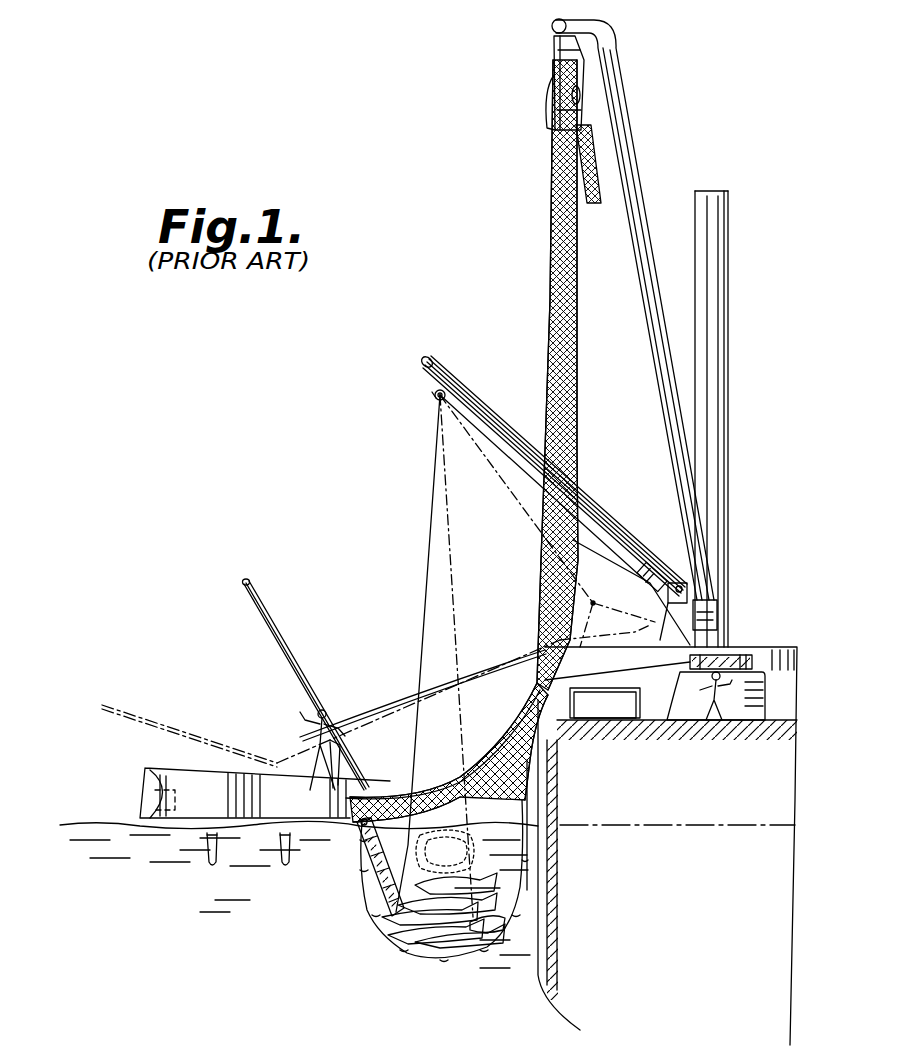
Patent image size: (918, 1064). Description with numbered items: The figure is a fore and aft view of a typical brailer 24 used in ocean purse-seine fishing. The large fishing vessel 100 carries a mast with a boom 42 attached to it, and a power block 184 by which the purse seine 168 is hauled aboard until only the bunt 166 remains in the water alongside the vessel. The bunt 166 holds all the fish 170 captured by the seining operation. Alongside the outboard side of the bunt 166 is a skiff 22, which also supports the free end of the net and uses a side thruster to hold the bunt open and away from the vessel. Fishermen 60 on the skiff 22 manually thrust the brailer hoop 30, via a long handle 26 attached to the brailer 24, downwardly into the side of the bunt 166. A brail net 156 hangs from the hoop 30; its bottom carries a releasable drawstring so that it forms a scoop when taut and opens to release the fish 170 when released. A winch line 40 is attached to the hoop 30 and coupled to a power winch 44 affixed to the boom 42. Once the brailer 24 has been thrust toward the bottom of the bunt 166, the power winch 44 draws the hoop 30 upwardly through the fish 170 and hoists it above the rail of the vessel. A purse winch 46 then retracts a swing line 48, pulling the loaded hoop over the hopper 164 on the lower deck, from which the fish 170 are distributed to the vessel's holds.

The power block 184 is at (552, 76).
The boom 42 is at (463, 392).
The power winch 44 is at (656, 560).
The winch line 40 is at (430, 540).
The purse winch 46 is at (742, 655).
The long handle 26 is at (268, 610).
The fishermen 60 is at (310, 725).
The brailer 24 is at (374, 757).
The skiff 22 is at (265, 793).
The hopper 164 is at (605, 703).
The swing line 48 is at (648, 728).
The purse seine 168 is at (540, 780).
The fishing vessel 100 is at (667, 846).
The brail net 156 is at (368, 872).
The hoop 30 is at (370, 900).
The bunt 166 is at (428, 962).
The fish 170 is at (470, 900).